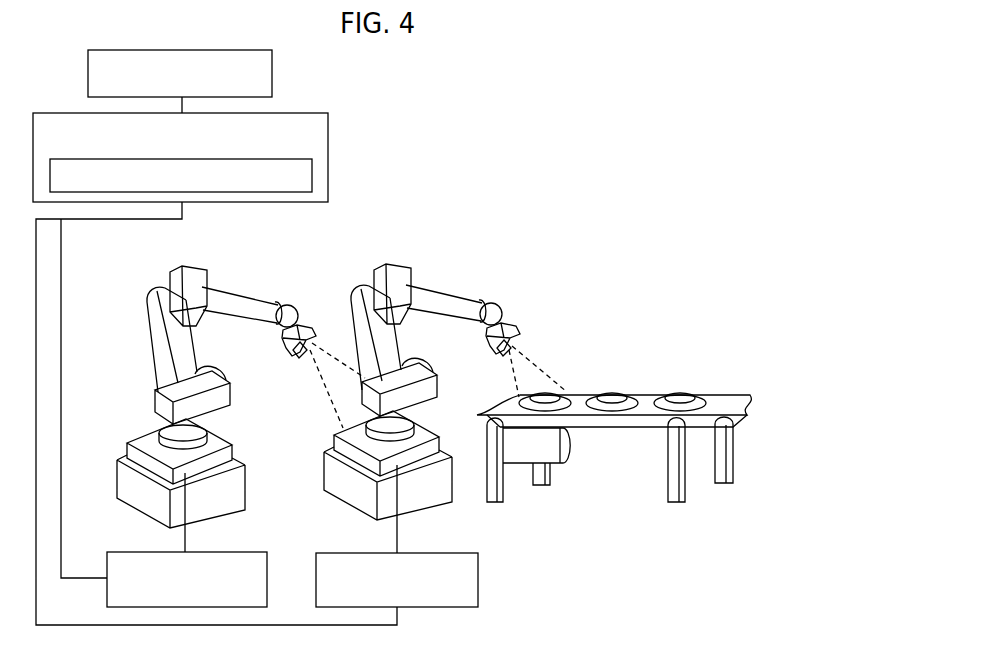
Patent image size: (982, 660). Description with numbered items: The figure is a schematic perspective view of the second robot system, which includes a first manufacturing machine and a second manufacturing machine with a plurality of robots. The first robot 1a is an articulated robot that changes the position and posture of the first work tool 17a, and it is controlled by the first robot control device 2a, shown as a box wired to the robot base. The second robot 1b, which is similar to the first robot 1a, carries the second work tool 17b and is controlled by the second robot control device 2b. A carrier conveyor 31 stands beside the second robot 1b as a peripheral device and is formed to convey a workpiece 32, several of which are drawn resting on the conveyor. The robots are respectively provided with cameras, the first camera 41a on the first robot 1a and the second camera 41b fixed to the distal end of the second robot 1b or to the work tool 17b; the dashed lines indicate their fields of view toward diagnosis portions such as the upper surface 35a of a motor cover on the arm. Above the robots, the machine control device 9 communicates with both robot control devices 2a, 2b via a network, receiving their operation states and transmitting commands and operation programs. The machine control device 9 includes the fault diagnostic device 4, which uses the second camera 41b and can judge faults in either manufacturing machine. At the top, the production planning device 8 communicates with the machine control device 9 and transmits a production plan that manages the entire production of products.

The production planning device 8 is at (272, 71).
The machine control device 9 is at (328, 122).
The fault diagnostic device 4 is at (312, 170).
The first robot 1a is at (199, 385).
The second robot 1b is at (422, 379).
The first robot control device 2a is at (267, 563).
The second robot control device 2b is at (478, 577).
The first work tool 17a is at (293, 352).
The second work tool 17b is at (507, 327).
The carrier conveyor 31 is at (613, 423).
The workpiece 32 is at (682, 395).
The upper surface 35a is at (430, 377).
The first camera 41a is at (303, 350).
The second camera 41b is at (507, 357).